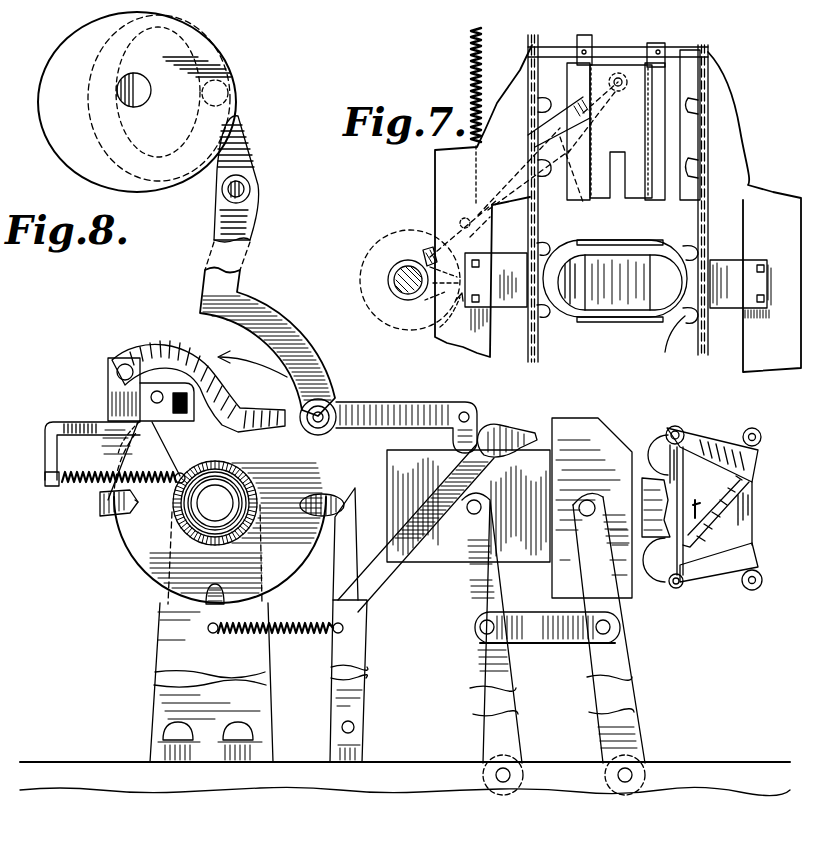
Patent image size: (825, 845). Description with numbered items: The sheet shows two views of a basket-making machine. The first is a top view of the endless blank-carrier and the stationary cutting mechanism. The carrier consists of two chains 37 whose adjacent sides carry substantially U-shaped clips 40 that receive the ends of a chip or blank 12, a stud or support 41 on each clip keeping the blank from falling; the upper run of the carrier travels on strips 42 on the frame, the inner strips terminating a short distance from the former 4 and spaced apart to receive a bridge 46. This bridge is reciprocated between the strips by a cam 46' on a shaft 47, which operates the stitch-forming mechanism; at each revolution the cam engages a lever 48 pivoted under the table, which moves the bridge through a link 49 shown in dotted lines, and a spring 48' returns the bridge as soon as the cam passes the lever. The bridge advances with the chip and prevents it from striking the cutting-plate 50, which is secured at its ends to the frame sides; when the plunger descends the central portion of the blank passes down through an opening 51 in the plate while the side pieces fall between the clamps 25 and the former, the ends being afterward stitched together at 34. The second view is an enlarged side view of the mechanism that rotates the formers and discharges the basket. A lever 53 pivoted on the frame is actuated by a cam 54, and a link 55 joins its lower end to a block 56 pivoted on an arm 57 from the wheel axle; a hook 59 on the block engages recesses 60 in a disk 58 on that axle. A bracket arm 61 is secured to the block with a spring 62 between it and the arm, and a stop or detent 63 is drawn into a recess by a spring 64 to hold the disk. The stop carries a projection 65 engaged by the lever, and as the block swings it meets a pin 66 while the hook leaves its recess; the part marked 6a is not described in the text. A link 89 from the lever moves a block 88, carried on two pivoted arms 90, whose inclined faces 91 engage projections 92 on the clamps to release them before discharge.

In FIG. 8, the lever 53 is at (242, 261).
In FIG. 8, the cam 54 is at (151, 102).
In FIG. 8, the link 55 is at (167, 346).
In FIG. 8, the block 56 is at (112, 382).
In FIG. 8, the arm 57 is at (193, 420).
In FIG. 8, the disk 58 is at (132, 600).
In FIG. 8, the hook 59 is at (100, 500).
In FIG. 8, the recesses 60 is at (219, 389).
In FIG. 8, the bracket arm 61 is at (78, 423).
In FIG. 8, the spring 62 is at (110, 469).
In FIG. 8, the stop or detent 63 is at (334, 614).
In FIG. 8, the spring 64 is at (275, 615).
In FIG. 8, the arm or projection 65 is at (512, 430).
In FIG. 8, the pin 66 is at (182, 473).
In FIG. 8, the pawl tooth 6a is at (138, 503).
In FIG. 8, the block 88 is at (578, 424).
In FIG. 8, the link 89 is at (406, 417).
In FIG. 8, the pivoted arms 90 is at (474, 616).
In FIG. 8, the inclined faces 91 is at (614, 448).
In FIG. 8, the projections 92 is at (657, 577).
In FIG. 8, the chip or blank 12 is at (720, 540).
In FIG. 8, the clamps 25 is at (748, 432).
In FIG. 8, the former 4 is at (761, 515).
In FIG. 7, the former 4 is at (582, 283).
In FIG. 8, the stitched ends 34 is at (704, 505).
In FIG. 7, the chains 37 is at (740, 282).
In FIG. 7, the U-shaped clips 40 is at (581, 282).
In FIG. 7, the stud or support 41 is at (671, 342).
In FIG. 7, the strips 42 is at (632, 137).
In FIG. 7, the bridge 46 is at (621, 131).
In FIG. 7, the cam 46' is at (420, 310).
In FIG. 7, the shaft 47 is at (387, 279).
In FIG. 7, the lever 48 is at (421, 235).
In FIG. 7, the spring 48' is at (491, 116).
In FIG. 7, the link 49 is at (572, 115).
In FIG. 7, the cutting-plate 50 is at (650, 318).
In FIG. 7, the opening 51 is at (620, 282).